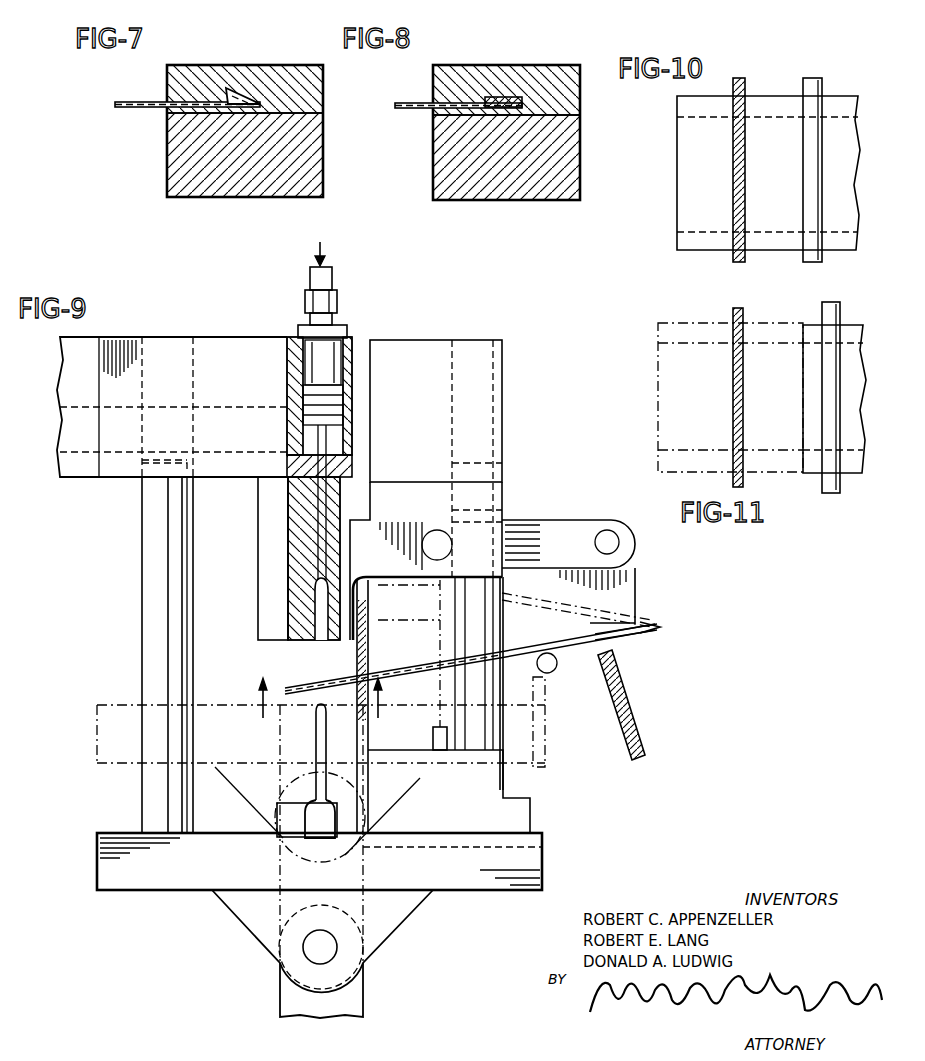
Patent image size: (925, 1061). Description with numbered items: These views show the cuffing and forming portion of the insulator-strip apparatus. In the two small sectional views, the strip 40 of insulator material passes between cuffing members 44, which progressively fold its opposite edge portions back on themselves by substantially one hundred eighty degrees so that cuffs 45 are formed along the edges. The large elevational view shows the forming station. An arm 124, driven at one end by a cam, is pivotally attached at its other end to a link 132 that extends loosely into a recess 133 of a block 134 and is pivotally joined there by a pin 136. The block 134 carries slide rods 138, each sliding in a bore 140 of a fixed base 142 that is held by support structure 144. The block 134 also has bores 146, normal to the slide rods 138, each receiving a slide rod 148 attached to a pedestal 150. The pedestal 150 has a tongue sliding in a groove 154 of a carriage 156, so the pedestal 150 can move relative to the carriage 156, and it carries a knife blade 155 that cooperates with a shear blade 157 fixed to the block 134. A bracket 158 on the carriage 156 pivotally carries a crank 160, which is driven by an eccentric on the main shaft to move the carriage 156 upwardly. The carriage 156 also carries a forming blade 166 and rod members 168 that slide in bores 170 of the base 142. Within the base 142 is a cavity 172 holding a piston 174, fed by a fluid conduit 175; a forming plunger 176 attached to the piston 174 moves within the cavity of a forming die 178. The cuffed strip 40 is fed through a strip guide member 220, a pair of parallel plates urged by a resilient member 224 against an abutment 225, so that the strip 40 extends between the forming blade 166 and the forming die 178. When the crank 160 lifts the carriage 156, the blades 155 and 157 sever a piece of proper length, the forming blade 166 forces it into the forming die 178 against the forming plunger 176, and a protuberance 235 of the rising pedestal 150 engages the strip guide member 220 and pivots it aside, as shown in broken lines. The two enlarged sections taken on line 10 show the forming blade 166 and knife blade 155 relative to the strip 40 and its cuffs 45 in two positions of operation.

In FIG. 9, the section line 10 is at (323, 708).
In FIG. 7, the strip 40 is at (140, 102).
In FIG. 8, the strip 40 is at (440, 104).
In FIG. 10, the strip 40 is at (677, 133).
In FIG. 11, the strip 40 is at (668, 392).
In FIG. 9, the strip 40 is at (370, 672).
In FIG. 7, the cuffing members 44 is at (165, 152).
In FIG. 8, the cuffing members 44 is at (432, 157).
In FIG. 8, the cuffs 45 is at (505, 97).
In FIG. 10, the cuffs 45 is at (768, 102).
In FIG. 11, the cuffs 45 is at (812, 328).
In FIG. 9, the arm 124 is at (630, 590).
In FIG. 9, the link 132 is at (558, 525).
In FIG. 9, the recess 133 is at (395, 525).
In FIG. 9, the block 134 is at (410, 342).
In FIG. 9, the pin 136 is at (437, 530).
In FIG. 9, the slide rods 138 is at (235, 412).
In FIG. 9, the bore 140 is at (112, 470).
In FIG. 9, the fixed base 142 is at (243, 347).
In FIG. 9, the support structure 144 is at (62, 388).
In FIG. 9, the bores 146 is at (490, 348).
In FIG. 9, the slide rod 148 is at (500, 470).
In FIG. 9, the pedestal 150 is at (520, 812).
In FIG. 9, the groove 154 is at (545, 847).
In FIG. 10, the knife blade 155 is at (815, 78).
In FIG. 11, the knife blade 155 is at (830, 302).
In FIG. 9, the knife blade 155 is at (415, 772).
In FIG. 9, the carriage 156 is at (100, 830).
In FIG. 9, the shear blade 157 is at (352, 612).
In FIG. 9, the bracket 158 is at (265, 815).
In FIG. 9, the crank 160 is at (285, 990).
In FIG. 10, the forming blade 166 is at (740, 78).
In FIG. 11, the forming blade 166 is at (738, 308).
In FIG. 9, the forming blade 166 is at (312, 657).
In FIG. 9, the rod members 168 is at (150, 655).
In FIG. 9, the bore 170 is at (145, 365).
In FIG. 9, the cavity 172 is at (340, 365).
In FIG. 9, the piston 174 is at (340, 410).
In FIG. 9, the fluid conduit 175 is at (310, 278).
In FIG. 9, the forming plunger 176 is at (300, 486).
In FIG. 9, the forming die 178 is at (262, 552).
In FIG. 9, the strip guide member 220 is at (612, 642).
In FIG. 9, the resilient member 224 is at (622, 698).
In FIG. 9, the abutment 225 is at (556, 672).
In FIG. 9, the protuberance 235 is at (440, 720).